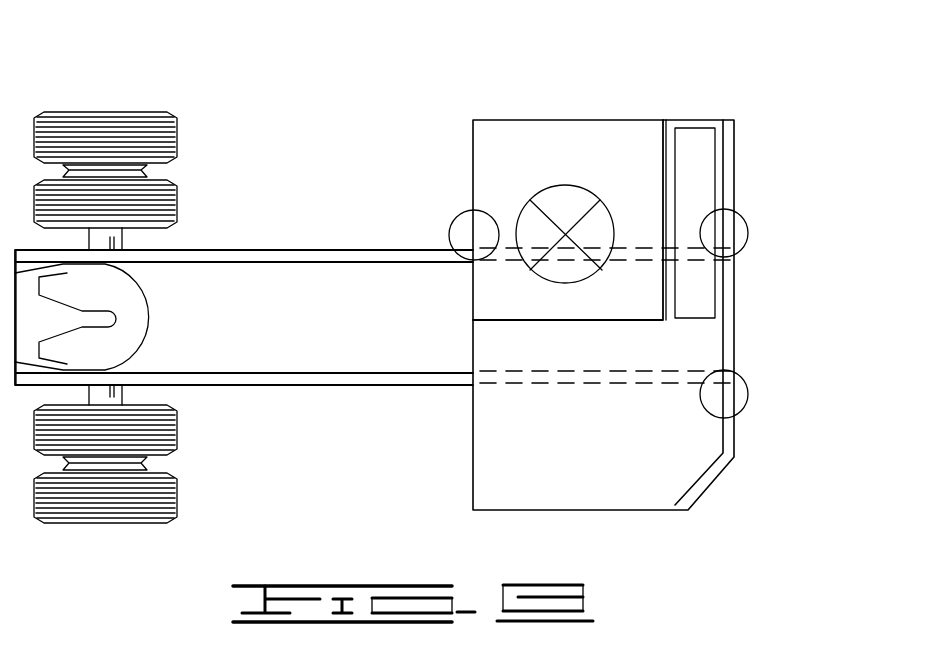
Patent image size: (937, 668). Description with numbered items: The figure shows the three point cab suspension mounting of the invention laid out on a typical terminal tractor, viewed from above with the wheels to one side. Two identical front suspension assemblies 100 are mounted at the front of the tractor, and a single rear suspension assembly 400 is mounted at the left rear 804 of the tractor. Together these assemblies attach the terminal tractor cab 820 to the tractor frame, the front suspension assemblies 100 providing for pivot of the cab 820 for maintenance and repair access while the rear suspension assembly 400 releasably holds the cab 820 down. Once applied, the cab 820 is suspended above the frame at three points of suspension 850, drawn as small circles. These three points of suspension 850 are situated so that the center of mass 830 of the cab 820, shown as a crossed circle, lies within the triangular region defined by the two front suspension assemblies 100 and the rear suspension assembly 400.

The front suspension assembly 100 is at (747, 240).
The rear suspension assembly 400 is at (457, 240).
The left rear 804 is at (473, 305).
The terminal tractor cab 820 is at (727, 327).
The center of mass 830 is at (575, 184).
The points of suspension 850 is at (458, 215).